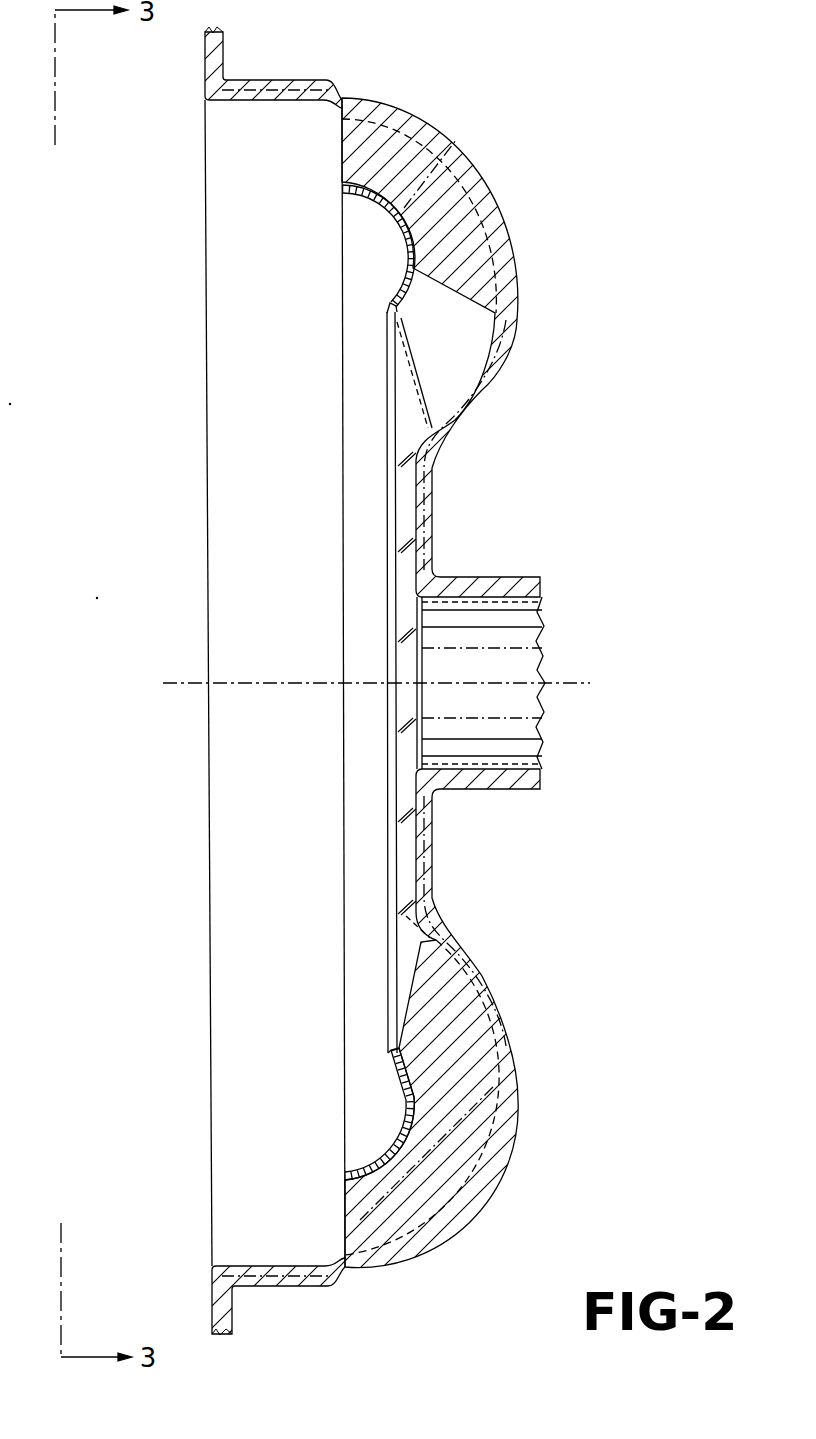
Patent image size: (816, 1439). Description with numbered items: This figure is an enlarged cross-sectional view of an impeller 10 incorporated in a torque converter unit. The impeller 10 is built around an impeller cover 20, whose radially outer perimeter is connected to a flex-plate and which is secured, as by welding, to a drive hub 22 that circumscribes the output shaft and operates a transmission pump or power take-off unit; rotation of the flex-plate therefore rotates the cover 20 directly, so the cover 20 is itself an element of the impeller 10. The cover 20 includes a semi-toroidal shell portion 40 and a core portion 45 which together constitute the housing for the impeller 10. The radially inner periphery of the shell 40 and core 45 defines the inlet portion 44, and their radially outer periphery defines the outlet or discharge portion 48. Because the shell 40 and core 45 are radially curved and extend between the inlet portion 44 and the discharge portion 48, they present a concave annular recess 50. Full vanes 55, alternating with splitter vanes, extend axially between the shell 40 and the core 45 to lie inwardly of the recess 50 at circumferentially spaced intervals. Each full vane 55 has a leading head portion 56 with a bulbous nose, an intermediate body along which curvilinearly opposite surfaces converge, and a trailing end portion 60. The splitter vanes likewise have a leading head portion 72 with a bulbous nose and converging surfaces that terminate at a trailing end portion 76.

The impeller 10 is at (514, 164).
The impeller cover 20 is at (265, 85).
The drive hub 22 is at (512, 592).
The semi-toroidal shell portion 40 is at (498, 348).
The inlet portion 44 is at (372, 975).
The core portion 45 is at (400, 290).
The outlet or discharge portion 48 is at (357, 212).
The concave annular recess 50 is at (433, 356).
The full vane 55 is at (430, 1110).
The leading head portion 56 is at (404, 1024).
The trailing end portion 60 is at (347, 1215).
The leading head portion 72 is at (398, 322).
The trailing end portion 76 is at (348, 148).